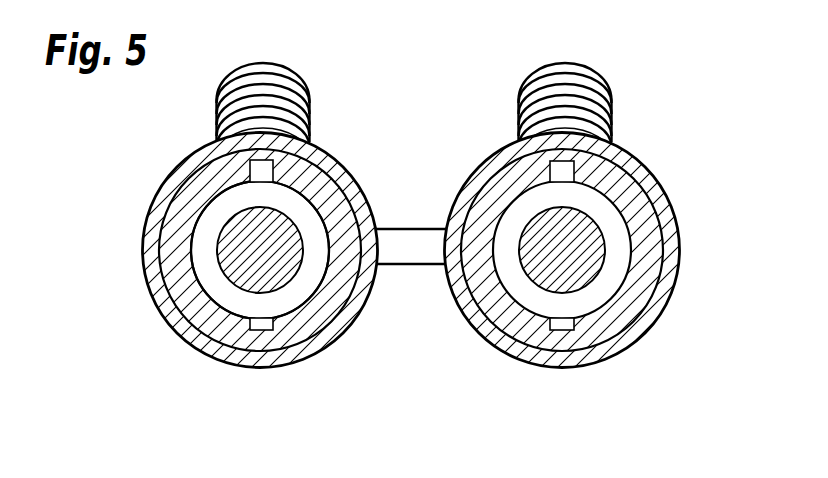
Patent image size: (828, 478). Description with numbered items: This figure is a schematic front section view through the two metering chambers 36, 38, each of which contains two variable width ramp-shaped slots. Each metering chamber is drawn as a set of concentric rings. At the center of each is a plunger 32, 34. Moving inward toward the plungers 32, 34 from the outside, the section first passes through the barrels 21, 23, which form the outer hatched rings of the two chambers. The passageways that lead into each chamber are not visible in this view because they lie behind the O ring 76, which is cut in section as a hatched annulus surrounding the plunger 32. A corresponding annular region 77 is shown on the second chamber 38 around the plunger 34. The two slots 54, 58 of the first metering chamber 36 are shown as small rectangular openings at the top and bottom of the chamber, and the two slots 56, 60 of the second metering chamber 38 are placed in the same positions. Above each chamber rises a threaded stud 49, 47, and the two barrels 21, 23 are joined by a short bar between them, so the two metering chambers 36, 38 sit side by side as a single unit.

The barrel 21 is at (155, 293).
The barrel 23 is at (680, 245).
The plunger 32 is at (195, 325).
The plunger 34 is at (598, 267).
The metering chamber 36 is at (158, 253).
The metering chamber 38 is at (638, 187).
The second threaded stud 47 is at (585, 62).
The first threaded stud 49 is at (275, 62).
The slot 54 is at (256, 171).
The slot 56 is at (574, 170).
The slot 58 is at (257, 327).
The slot 60 is at (574, 325).
The O ring 76 is at (200, 238).
The second annular gap 77 is at (623, 228).